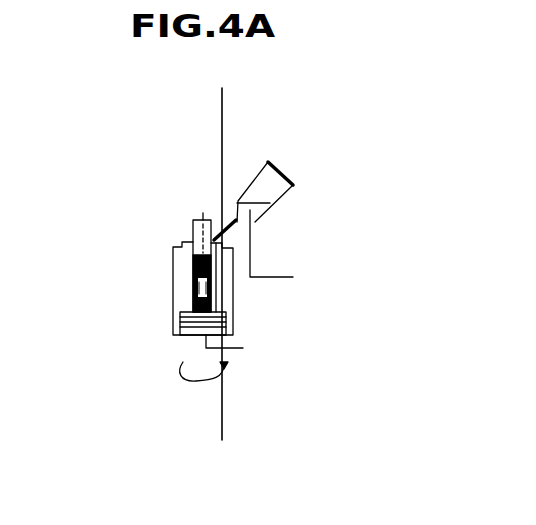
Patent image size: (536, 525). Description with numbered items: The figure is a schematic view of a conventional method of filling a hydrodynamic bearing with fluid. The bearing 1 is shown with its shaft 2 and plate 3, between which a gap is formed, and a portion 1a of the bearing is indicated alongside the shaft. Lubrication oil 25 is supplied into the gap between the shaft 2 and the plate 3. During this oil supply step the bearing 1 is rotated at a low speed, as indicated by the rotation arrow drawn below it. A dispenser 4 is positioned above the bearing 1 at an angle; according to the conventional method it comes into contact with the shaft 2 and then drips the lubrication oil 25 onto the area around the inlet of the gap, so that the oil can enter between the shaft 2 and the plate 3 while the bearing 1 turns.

The bearing 1 is at (228, 303).
The light emitting portion 1a is at (193, 234).
The shaft 2 is at (198, 291).
The plate 3 is at (243, 348).
The dispenser 4 is at (261, 173).
The lubrication oil 25 is at (255, 244).